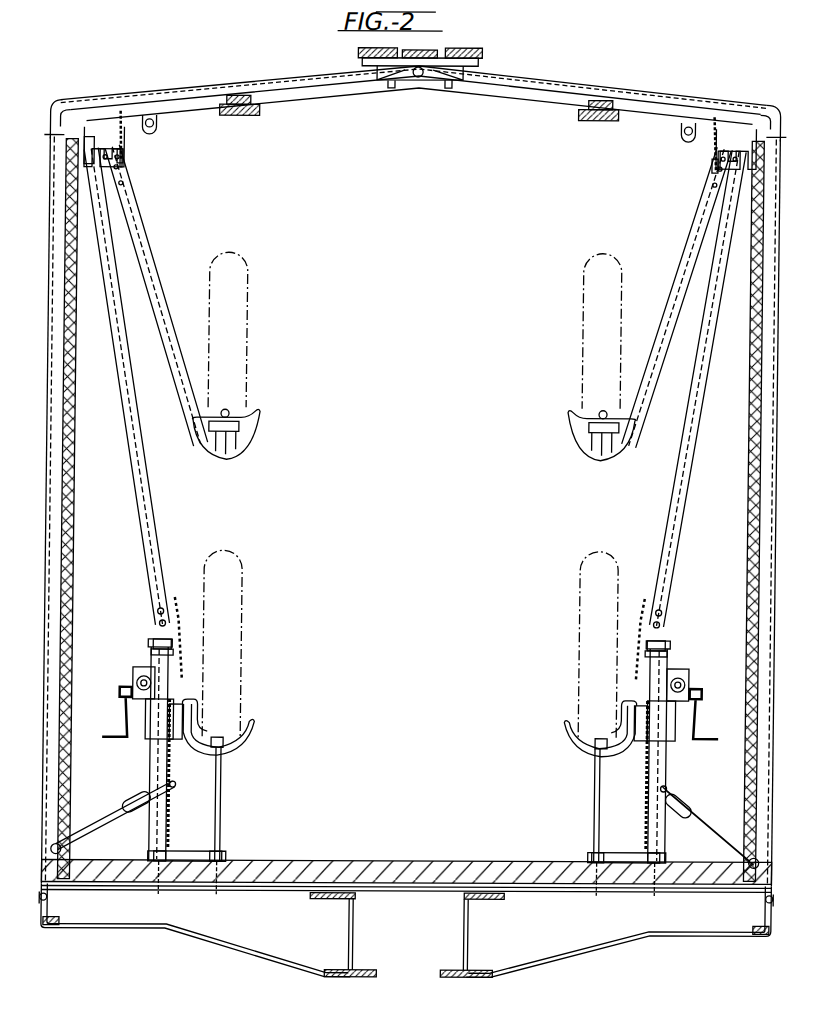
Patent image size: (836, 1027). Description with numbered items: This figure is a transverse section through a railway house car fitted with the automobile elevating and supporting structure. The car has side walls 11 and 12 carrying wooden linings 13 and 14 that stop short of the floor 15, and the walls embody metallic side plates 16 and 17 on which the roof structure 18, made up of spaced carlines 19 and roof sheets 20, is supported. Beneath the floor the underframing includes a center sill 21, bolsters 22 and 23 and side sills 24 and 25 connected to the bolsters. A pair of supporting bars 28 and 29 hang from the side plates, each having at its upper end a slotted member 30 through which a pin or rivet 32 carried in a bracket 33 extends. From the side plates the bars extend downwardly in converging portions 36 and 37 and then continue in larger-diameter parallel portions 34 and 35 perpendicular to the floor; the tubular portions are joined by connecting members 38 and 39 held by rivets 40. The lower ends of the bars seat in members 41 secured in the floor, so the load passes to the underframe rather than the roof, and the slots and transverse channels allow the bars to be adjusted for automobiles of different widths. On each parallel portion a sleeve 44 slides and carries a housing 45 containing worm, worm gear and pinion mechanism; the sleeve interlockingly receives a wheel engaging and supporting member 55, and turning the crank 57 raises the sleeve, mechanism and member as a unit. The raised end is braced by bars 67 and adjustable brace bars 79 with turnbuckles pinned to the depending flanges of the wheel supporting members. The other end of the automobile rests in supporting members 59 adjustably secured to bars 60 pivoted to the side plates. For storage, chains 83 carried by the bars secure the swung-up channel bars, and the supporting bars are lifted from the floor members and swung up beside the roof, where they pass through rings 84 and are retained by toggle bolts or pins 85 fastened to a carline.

The side wall 11 is at (47, 400).
The side wall 12 is at (778, 458).
The wooden lining 13 is at (70, 464).
The wooden lining 14 is at (754, 493).
The floor 15 is at (360, 877).
The side plate 16 is at (51, 138).
The side plate 17 is at (774, 145).
The roof structure 18 is at (550, 92).
The carlines 19 is at (447, 93).
The roof sheets 20 is at (313, 82).
The center sill 21 is at (352, 930).
The bolster 22 is at (193, 926).
The bolster 23 is at (687, 920).
The side sill 24 is at (50, 920).
The side sill 25 is at (770, 930).
The supporting bar 28 is at (158, 527).
The supporting bar 29 is at (677, 516).
The member 30 is at (90, 158).
The pin or rivet 32 is at (88, 150).
The bracket 33 is at (86, 135).
The parallel portion 34 is at (170, 830).
The parallel portion 35 is at (652, 830).
The converging portion 36 is at (145, 494).
The converging portion 37 is at (683, 471).
The connecting member 38 is at (160, 642).
The connecting member 39 is at (668, 648).
The rivets 40 is at (160, 622).
The members 41 is at (143, 863).
The sleeve 44 is at (172, 703).
The housing 45 is at (140, 672).
The wheel engaging and supporting member 55 is at (242, 740).
The crank 57 is at (131, 748).
The supporting members 59 is at (246, 447).
The bars 60 is at (139, 262).
The bar 67 is at (224, 812).
The brace bar 79 is at (107, 822).
The chains 83 is at (178, 620).
The rings 84 is at (148, 128).
The toggle bolts or pins 85 is at (120, 157).